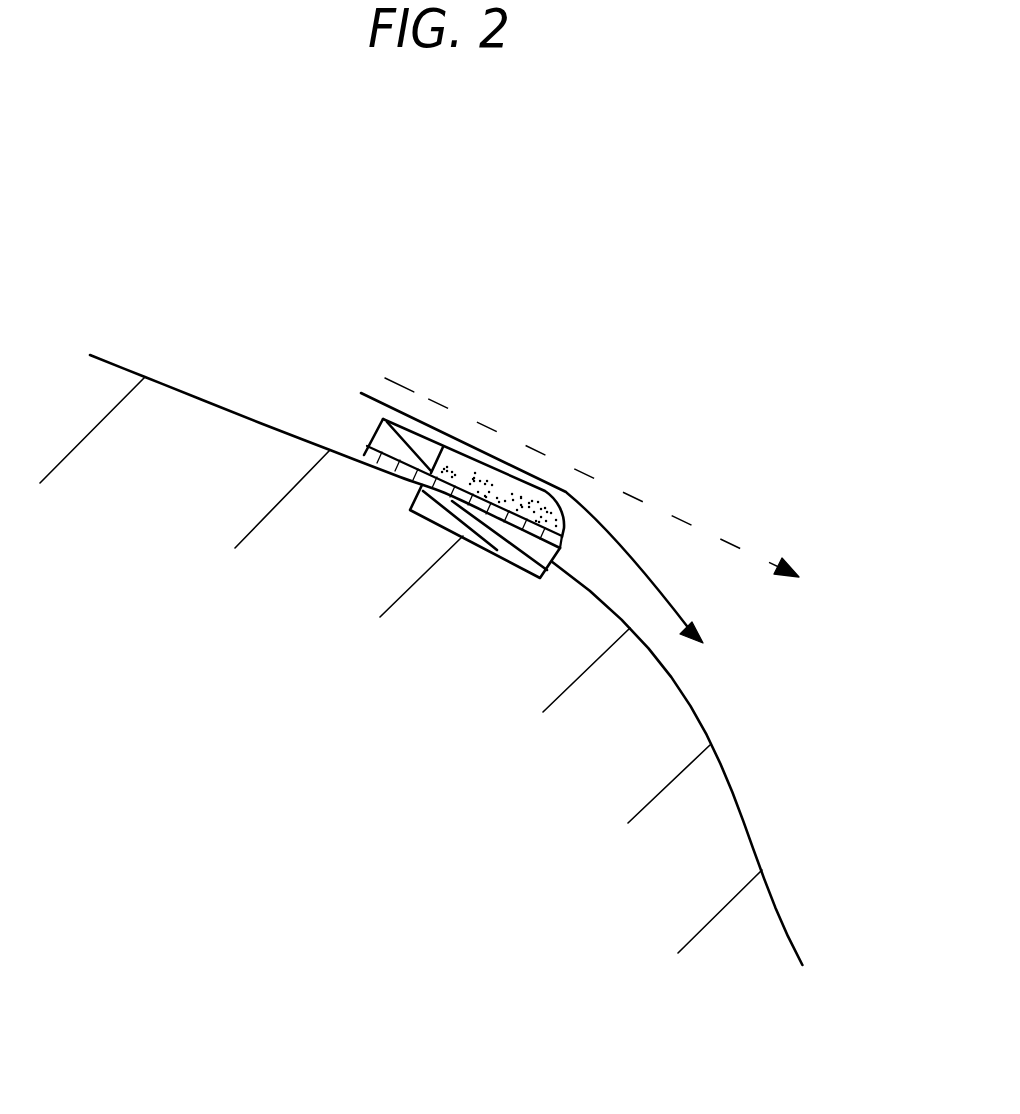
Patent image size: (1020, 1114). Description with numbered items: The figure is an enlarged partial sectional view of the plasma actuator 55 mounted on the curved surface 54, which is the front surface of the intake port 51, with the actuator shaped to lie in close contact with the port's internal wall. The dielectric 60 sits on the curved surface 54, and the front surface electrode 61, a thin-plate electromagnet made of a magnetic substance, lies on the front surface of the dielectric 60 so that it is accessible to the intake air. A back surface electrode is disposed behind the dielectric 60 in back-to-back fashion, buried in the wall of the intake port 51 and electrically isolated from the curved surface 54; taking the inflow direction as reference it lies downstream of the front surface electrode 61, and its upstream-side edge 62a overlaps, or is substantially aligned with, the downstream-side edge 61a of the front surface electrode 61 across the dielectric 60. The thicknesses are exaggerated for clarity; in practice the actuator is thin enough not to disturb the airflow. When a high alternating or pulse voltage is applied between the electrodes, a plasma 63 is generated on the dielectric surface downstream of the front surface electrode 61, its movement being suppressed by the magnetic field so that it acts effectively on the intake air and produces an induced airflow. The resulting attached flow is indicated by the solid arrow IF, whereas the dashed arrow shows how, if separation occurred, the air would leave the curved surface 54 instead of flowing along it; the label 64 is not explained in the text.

The intake port 51 is at (669, 314).
The curved surface 54 is at (163, 381).
The plasma actuator 55 is at (578, 298).
The dielectric 60 is at (362, 452).
The front surface electrode 61 is at (408, 440).
The downstream-side edge 61a is at (440, 449).
The upstream-side edge 62a is at (552, 568).
The plasma 63 is at (566, 491).
The base 64 is at (492, 553).
The solid arrow IF is at (655, 572).